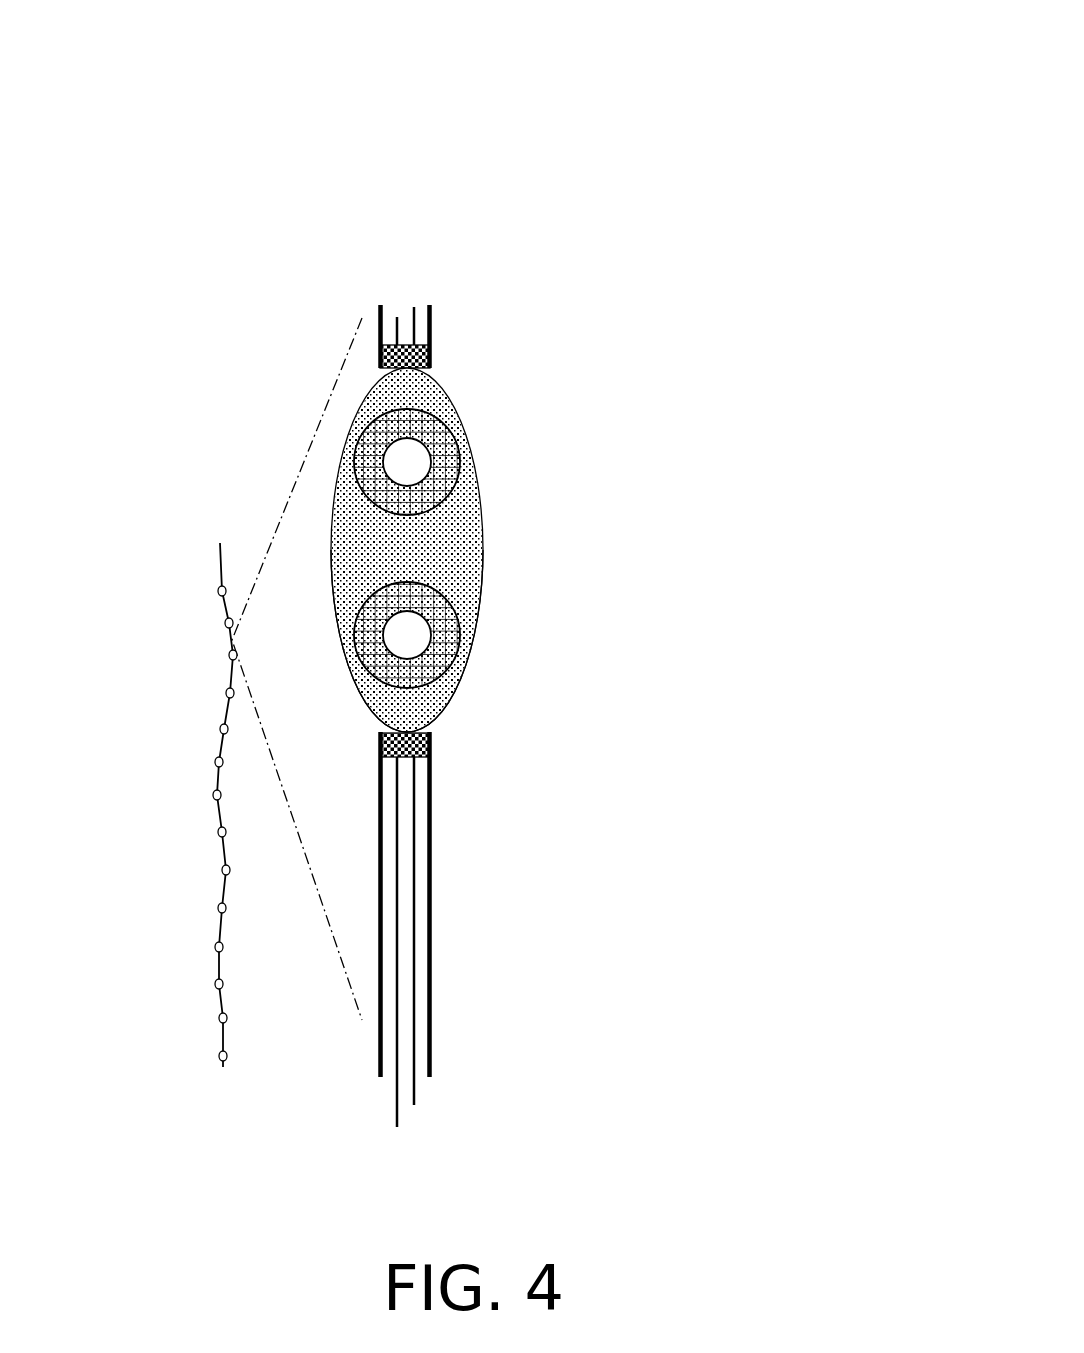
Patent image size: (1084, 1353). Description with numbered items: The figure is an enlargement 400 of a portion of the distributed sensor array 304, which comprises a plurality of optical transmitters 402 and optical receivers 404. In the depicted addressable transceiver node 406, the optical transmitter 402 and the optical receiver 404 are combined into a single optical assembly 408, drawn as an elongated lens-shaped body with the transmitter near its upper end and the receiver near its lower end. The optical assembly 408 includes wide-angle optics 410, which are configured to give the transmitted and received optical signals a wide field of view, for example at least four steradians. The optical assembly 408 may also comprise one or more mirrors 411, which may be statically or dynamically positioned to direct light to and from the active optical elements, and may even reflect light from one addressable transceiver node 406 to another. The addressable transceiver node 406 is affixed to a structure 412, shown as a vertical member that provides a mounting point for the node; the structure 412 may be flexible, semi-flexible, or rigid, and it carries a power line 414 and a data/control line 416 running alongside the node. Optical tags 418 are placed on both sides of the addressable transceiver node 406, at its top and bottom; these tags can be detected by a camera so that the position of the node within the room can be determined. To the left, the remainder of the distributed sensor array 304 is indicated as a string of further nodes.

The enlargement 400 is at (782, 22).
The distributed sensor array 304 is at (229, 1069).
The optical transmitter 402 is at (407, 462).
The optical receiver 404 is at (407, 635).
The addressable transceiver node 406 is at (458, 413).
The optical assembly 408 is at (447, 565).
The wide-angle optics 410 is at (450, 702).
The mirror 411 is at (377, 485).
The structure 412 is at (443, 315).
The power line 414 is at (397, 317).
The data/control line 416 is at (414, 307).
The optical tag 418 is at (430, 748).